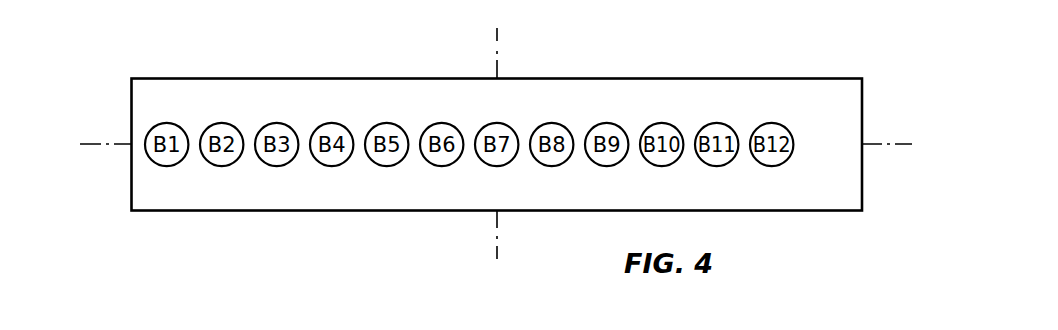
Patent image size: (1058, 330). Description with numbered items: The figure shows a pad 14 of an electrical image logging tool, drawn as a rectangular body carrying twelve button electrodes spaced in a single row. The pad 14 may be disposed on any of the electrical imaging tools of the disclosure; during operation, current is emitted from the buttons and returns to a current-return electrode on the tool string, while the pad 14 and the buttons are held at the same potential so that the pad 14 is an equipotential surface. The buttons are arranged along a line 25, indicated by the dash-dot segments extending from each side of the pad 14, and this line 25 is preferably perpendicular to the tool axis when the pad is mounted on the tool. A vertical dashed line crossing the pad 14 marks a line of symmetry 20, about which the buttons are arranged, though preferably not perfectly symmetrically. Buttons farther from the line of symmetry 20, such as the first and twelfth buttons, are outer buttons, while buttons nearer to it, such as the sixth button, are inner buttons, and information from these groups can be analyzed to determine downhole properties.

The pad 14 is at (745, 92).
The line of symmetry 20 is at (497, 37).
The line 25 is at (83, 144).